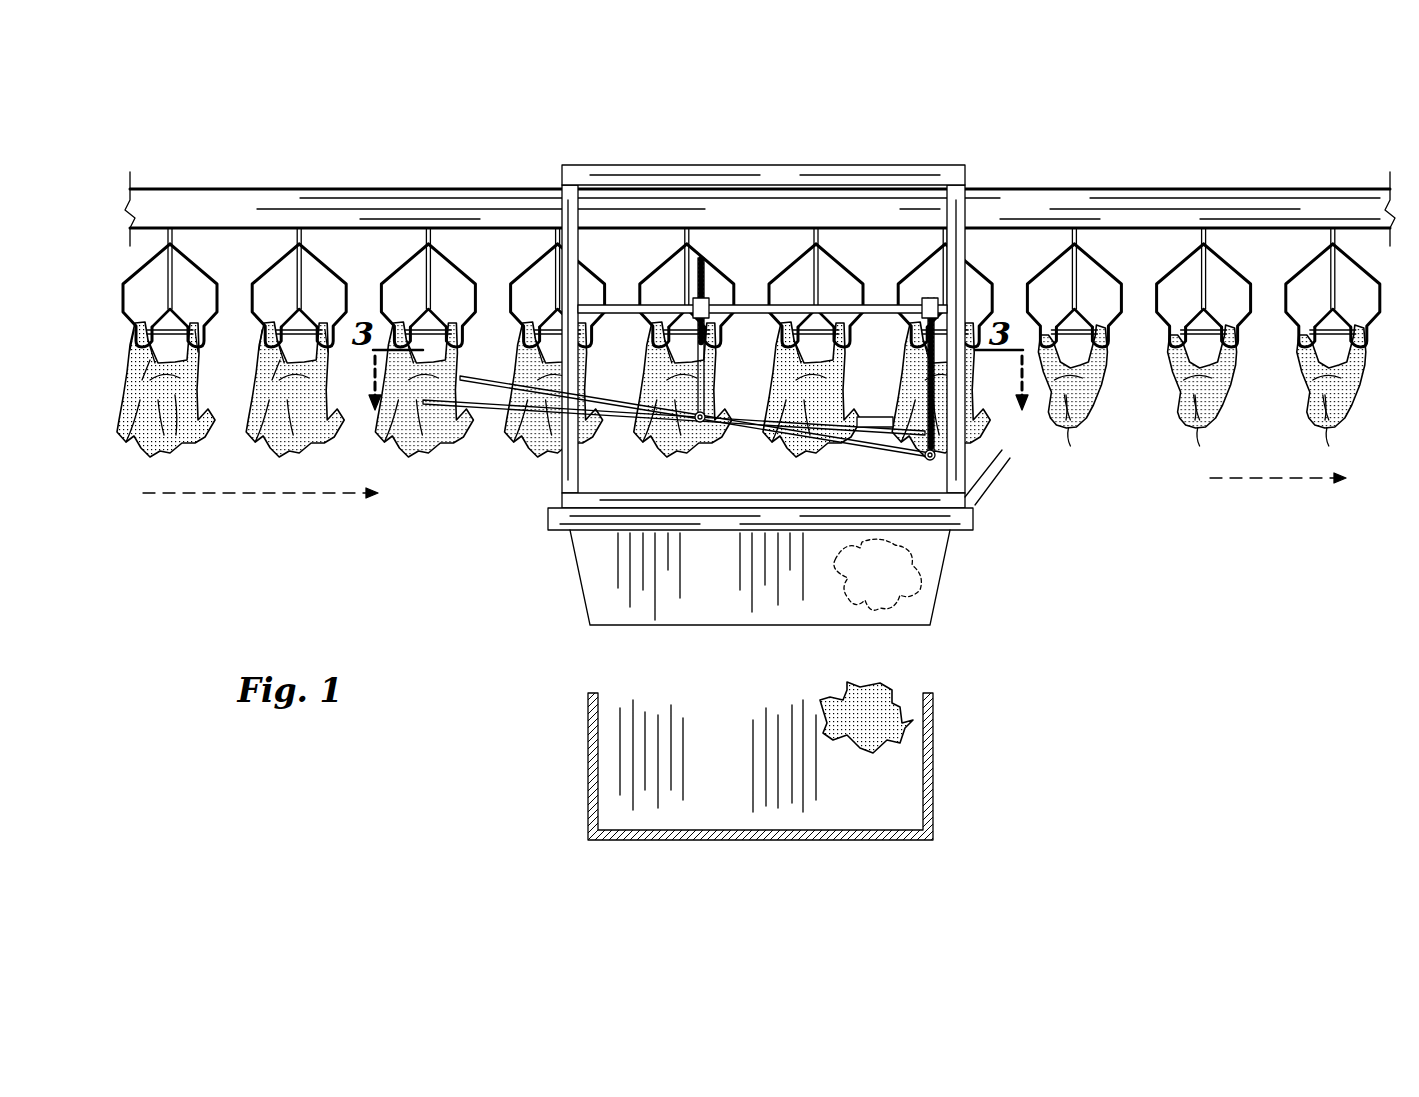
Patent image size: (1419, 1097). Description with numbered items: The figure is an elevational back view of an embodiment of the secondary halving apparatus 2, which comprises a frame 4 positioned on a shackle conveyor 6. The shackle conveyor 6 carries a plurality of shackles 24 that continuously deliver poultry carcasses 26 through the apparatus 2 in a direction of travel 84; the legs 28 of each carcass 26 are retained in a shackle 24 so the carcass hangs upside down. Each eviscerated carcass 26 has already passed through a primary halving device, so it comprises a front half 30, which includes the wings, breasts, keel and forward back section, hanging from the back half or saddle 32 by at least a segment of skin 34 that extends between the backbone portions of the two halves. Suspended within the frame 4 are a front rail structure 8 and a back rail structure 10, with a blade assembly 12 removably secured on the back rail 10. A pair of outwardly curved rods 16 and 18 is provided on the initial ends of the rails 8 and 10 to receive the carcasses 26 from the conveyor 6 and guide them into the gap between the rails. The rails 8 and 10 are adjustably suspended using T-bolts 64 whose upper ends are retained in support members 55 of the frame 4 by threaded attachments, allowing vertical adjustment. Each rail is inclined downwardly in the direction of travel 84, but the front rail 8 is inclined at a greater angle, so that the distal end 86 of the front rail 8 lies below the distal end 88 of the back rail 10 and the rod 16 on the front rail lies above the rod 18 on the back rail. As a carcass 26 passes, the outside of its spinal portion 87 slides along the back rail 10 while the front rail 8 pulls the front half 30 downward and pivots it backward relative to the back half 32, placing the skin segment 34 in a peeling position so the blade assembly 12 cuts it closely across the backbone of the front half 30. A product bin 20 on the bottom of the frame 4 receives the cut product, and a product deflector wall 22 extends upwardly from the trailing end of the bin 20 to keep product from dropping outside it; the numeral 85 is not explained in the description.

The secondary halving apparatus 2 is at (749, 334).
The frame 4 is at (957, 193).
The shackle conveyor 6 is at (388, 202).
The front rail structure 8 is at (608, 398).
The back rail structure 10 is at (627, 423).
The blade assembly 12 is at (868, 413).
The outwardly curved rod 16 is at (492, 378).
The outwardly curved rod 18 is at (497, 410).
The product bin 20 is at (608, 592).
The product deflector wall 22 is at (1000, 482).
The shackle 24 is at (188, 255).
The poultry carcass 26 is at (180, 455).
The legs 28 is at (328, 357).
The front half 30 is at (162, 432).
The back half (saddle) 32 is at (205, 368).
The segment of skin 34 is at (1070, 432).
The support member 55 is at (750, 303).
The T-bolt 64 is at (703, 390).
The direction of travel 84 is at (282, 498).
The hanging carcass spacing 85 is at (492, 280).
The distal end of front rail 86 is at (925, 457).
The spinal portion 87 is at (152, 370).
The distal end of back rail 88 is at (915, 427).